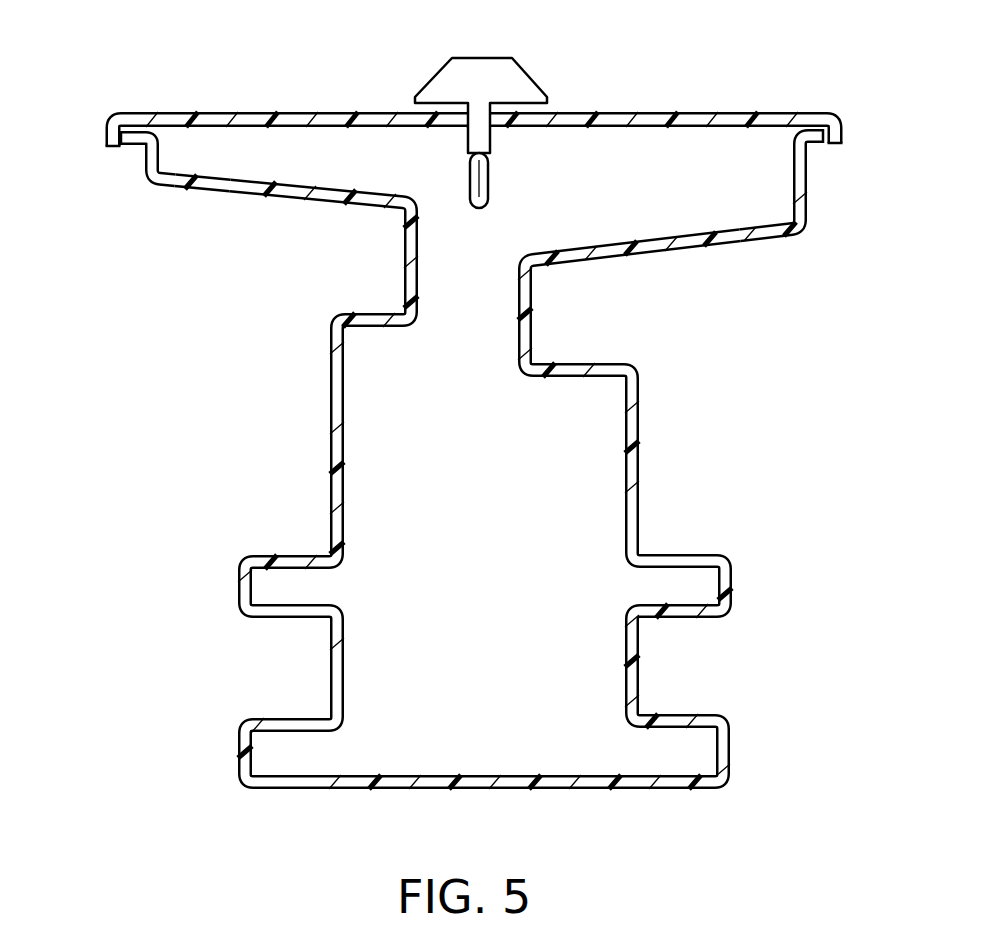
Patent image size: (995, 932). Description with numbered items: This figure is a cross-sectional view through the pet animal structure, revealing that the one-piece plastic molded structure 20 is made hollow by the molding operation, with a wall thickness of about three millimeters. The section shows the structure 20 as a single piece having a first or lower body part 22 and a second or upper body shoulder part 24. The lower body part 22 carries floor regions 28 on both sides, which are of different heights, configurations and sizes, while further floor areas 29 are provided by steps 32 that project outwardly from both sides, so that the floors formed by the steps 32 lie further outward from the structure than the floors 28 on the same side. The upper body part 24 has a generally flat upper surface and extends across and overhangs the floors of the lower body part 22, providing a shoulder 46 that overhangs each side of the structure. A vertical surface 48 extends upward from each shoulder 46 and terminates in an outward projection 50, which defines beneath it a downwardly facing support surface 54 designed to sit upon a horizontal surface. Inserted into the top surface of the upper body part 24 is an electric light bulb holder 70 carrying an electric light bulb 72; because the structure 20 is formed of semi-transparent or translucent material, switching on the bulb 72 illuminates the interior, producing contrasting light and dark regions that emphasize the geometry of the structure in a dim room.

The plastic molded structure 20 is at (238, 413).
The lower body part 22 is at (641, 420).
The upper body shoulder part 24 is at (474, 80).
The floor regions 28 is at (376, 316).
The floor areas 29 is at (280, 557).
The steps 32 is at (238, 588).
The shoulder 46 is at (148, 178).
The vertical surface 48 is at (145, 162).
The outward projection 50 is at (105, 118).
The support surface 54 is at (122, 147).
The electric light bulb holder 70 is at (441, 75).
The electric light bulb 72 is at (490, 180).